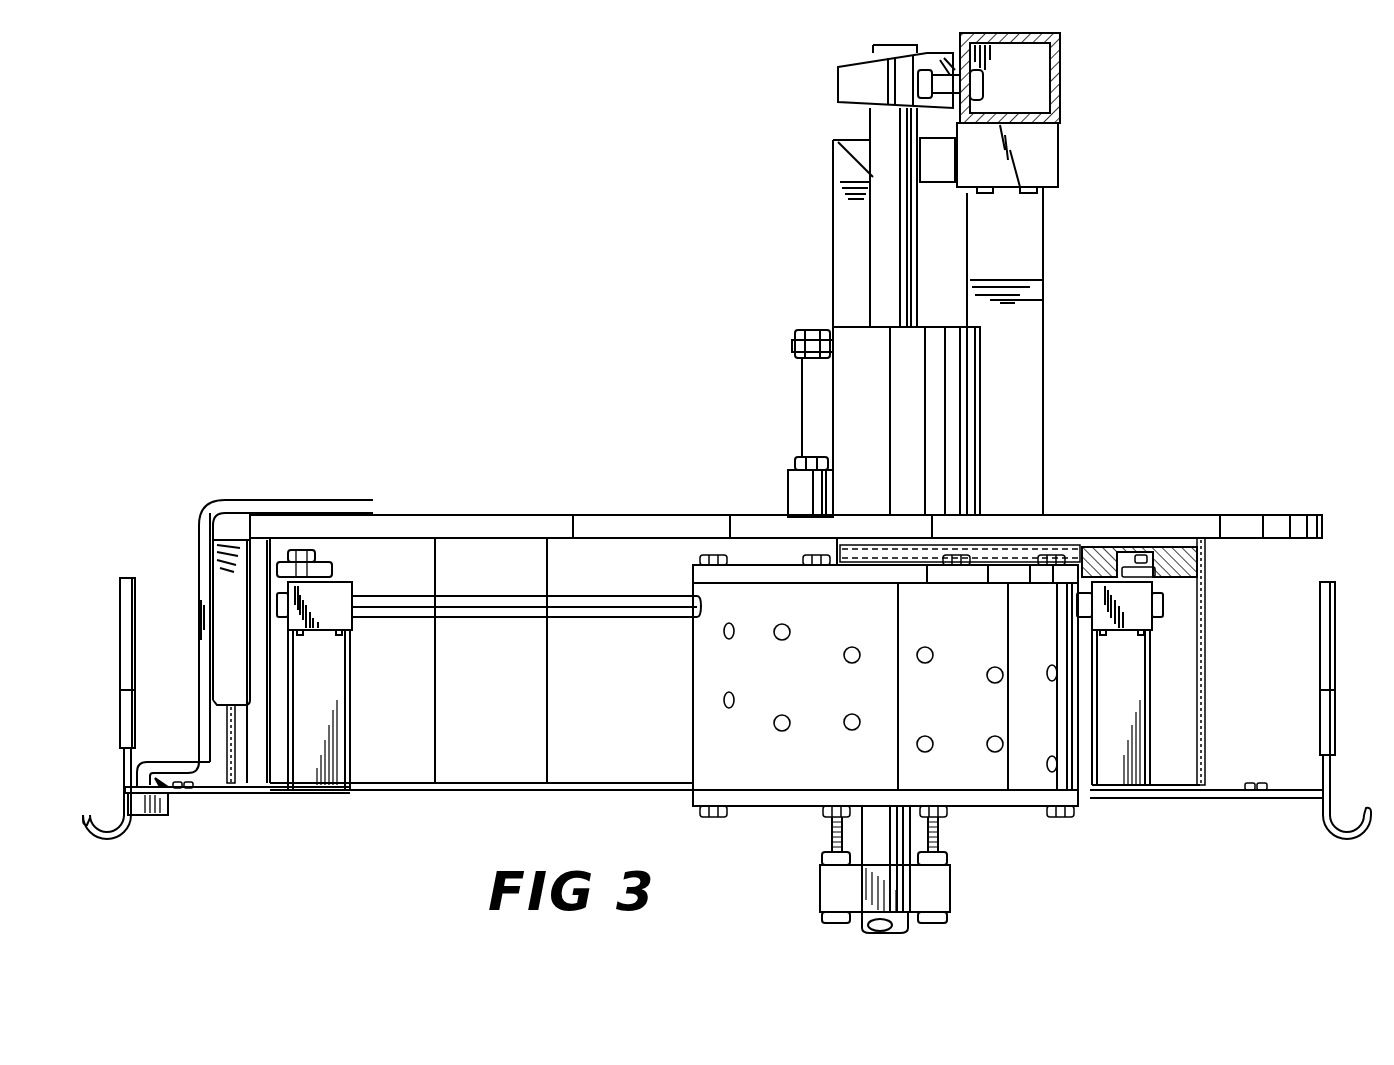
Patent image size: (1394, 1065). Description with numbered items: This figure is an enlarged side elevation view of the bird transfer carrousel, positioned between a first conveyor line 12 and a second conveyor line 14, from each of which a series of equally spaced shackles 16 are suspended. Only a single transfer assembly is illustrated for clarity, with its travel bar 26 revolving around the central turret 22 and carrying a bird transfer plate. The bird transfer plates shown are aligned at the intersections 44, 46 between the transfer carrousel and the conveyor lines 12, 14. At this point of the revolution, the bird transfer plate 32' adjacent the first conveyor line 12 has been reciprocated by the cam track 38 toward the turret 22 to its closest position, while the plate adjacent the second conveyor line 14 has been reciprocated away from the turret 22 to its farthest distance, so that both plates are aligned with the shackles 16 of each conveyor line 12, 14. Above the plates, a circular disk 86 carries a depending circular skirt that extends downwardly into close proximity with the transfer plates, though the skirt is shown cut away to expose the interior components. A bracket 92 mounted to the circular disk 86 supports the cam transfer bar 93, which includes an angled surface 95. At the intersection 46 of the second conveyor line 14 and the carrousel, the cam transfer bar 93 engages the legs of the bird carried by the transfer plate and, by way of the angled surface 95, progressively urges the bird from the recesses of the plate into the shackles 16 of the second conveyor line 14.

The first conveyor line 12 is at (1330, 577).
The second conveyor line 14 is at (128, 572).
The shackles 16 is at (132, 653).
The turret 22 is at (698, 713).
The travel bar 26 is at (477, 607).
The bird transfer plate adjacent first conveyor line 32' is at (1206, 817).
The cam track 38 is at (1113, 552).
The intersection 44 is at (1317, 803).
The intersection 46 is at (140, 823).
The circular disk 86 is at (525, 527).
The bracket 92 is at (203, 518).
The cam transfer bar 93 is at (162, 768).
The angled surface 95 is at (173, 793).